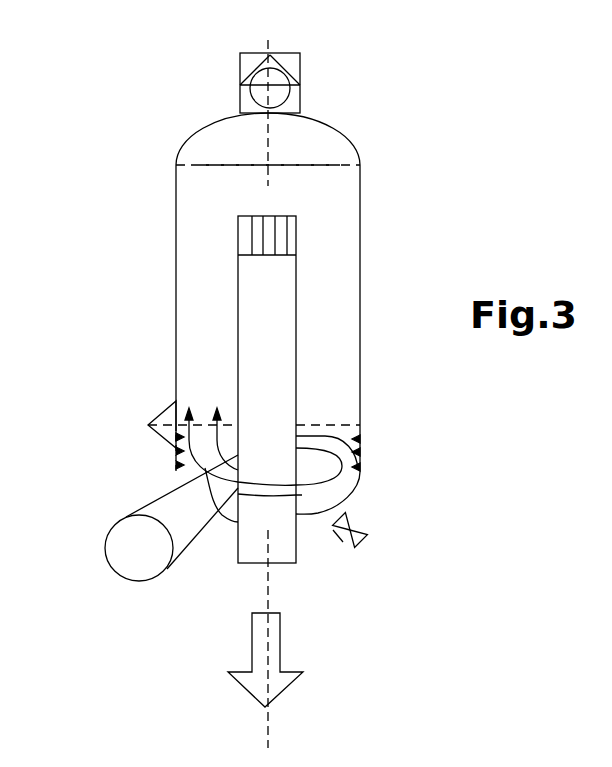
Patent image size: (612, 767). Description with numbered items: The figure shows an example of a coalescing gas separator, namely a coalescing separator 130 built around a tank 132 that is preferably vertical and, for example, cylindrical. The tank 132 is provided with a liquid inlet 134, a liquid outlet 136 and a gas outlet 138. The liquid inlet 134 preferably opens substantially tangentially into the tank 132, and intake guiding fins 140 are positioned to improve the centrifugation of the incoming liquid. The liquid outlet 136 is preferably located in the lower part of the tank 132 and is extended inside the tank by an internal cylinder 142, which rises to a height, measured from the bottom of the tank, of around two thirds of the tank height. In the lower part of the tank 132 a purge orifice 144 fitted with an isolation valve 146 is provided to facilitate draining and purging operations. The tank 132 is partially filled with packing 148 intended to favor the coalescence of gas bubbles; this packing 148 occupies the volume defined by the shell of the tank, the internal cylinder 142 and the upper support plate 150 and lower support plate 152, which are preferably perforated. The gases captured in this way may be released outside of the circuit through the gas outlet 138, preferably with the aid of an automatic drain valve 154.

The coalescing separator 130 is at (426, 97).
The tank 132 is at (362, 221).
The liquid inlet 134 is at (118, 548).
The liquid outlet 136 is at (247, 580).
The gas outlet 138 is at (308, 67).
The intake guiding fins 140 is at (176, 465).
The internal cylinder 142 is at (308, 501).
The purge orifice 144 is at (322, 512).
The isolation valve 146 is at (358, 535).
The packing 148 is at (196, 325).
The upper support plate 150 is at (205, 164).
The lower support plate 152 is at (342, 424).
The automatic drain valve 154 is at (262, 90).